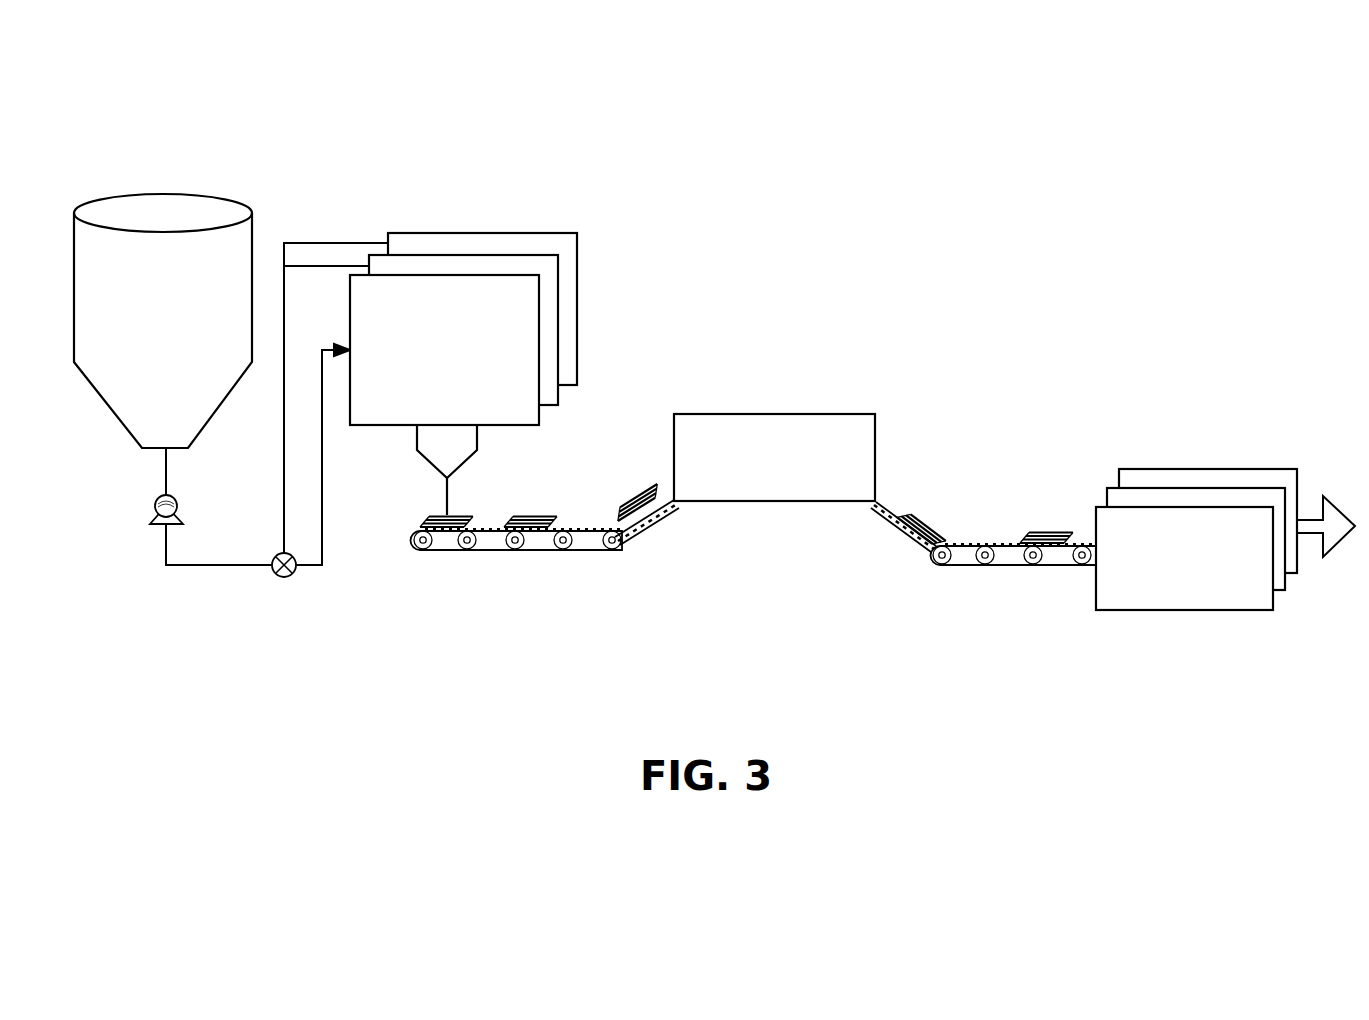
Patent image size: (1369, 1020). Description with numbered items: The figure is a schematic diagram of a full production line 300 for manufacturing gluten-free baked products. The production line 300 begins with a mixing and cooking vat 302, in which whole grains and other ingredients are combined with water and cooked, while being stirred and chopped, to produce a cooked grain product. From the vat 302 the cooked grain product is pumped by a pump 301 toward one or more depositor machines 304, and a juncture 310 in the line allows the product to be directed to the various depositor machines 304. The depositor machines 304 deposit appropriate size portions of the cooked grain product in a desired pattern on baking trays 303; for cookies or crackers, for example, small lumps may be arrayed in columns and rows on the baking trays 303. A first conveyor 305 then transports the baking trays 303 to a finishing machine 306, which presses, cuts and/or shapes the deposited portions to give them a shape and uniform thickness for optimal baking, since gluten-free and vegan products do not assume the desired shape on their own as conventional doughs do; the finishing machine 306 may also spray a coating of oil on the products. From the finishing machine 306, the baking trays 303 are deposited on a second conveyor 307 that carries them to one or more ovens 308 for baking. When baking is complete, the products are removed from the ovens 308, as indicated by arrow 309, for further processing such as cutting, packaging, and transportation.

The production line 300 is at (1025, 212).
The pump 301 is at (152, 524).
The mixing and cooking vat 302 is at (210, 200).
The baking trays 303 is at (470, 514).
The depositor machines 304 is at (540, 346).
The first conveyor 305 is at (581, 551).
The finishing machine 306 is at (876, 456).
The second conveyor 307 is at (1018, 566).
The ovens 308 is at (1185, 507).
The arrow 309 is at (1318, 538).
The juncture 310 is at (292, 577).